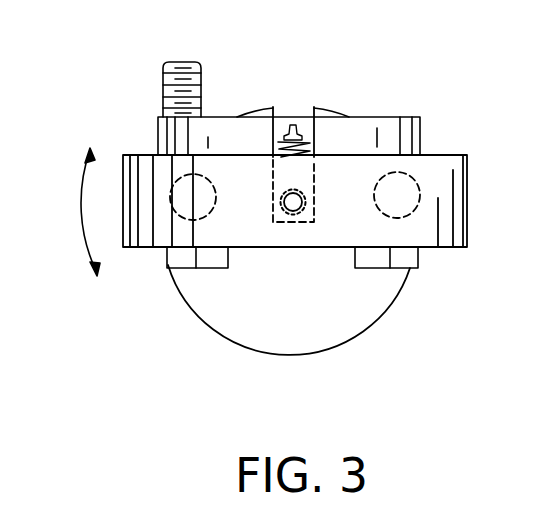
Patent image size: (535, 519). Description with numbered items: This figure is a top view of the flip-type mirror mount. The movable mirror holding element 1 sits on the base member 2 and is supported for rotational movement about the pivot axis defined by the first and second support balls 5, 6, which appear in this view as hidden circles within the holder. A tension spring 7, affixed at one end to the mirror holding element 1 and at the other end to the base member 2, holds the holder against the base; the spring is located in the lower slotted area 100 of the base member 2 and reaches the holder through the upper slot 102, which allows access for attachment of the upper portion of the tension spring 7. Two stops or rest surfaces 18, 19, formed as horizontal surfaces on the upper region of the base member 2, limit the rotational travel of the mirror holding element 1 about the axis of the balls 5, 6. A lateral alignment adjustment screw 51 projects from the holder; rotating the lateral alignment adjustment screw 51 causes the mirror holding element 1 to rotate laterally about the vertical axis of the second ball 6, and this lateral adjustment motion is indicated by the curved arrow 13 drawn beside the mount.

The movable mirror holding element 1 is at (325, 201).
The base member 2 is at (316, 314).
The first support ball 5 is at (214, 279).
The second support ball 6 is at (433, 157).
The tension spring 7 is at (310, 122).
The arrow 13 is at (60, 212).
The rest surface 18 is at (144, 286).
The rest surface 19 is at (434, 271).
The lateral alignment adjustment screw 51 is at (150, 83).
The lower slotted area 100 is at (271, 89).
The upper slot 102 is at (351, 292).